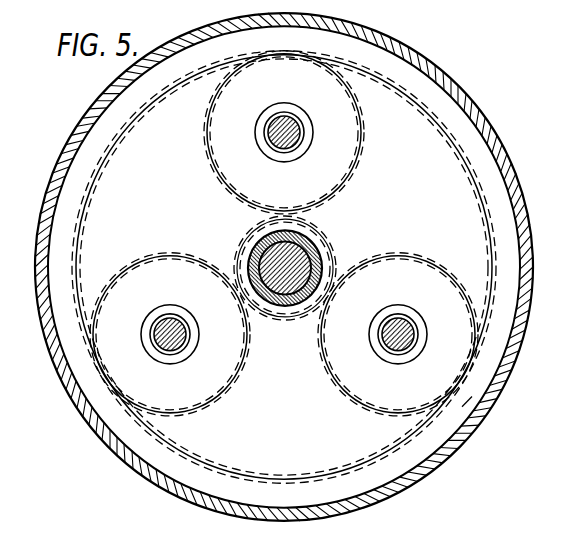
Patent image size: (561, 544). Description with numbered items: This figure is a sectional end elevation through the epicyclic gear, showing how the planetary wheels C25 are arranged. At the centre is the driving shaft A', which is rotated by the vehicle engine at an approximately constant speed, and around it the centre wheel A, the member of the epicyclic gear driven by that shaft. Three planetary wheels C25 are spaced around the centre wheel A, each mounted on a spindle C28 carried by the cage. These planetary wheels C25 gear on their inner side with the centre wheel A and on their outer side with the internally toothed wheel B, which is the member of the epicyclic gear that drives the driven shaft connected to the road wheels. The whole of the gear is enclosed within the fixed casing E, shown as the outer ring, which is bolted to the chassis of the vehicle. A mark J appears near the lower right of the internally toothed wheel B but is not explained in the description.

The centre wheel A is at (298, 267).
The driving shaft A' is at (285, 300).
The internally toothed wheel B is at (120, 136).
The planetary wheels C25 is at (362, 157).
The spindle C28 is at (288, 149).
The fixed casing E is at (380, 494).
The junction J is at (454, 421).